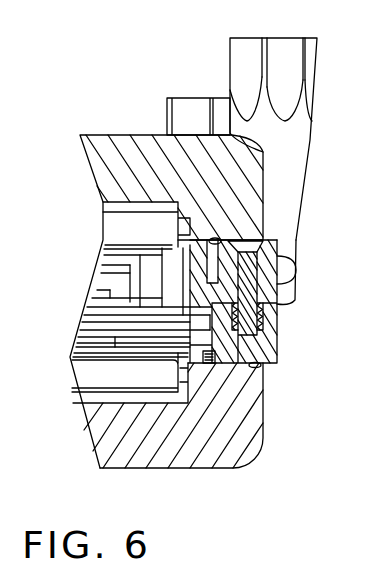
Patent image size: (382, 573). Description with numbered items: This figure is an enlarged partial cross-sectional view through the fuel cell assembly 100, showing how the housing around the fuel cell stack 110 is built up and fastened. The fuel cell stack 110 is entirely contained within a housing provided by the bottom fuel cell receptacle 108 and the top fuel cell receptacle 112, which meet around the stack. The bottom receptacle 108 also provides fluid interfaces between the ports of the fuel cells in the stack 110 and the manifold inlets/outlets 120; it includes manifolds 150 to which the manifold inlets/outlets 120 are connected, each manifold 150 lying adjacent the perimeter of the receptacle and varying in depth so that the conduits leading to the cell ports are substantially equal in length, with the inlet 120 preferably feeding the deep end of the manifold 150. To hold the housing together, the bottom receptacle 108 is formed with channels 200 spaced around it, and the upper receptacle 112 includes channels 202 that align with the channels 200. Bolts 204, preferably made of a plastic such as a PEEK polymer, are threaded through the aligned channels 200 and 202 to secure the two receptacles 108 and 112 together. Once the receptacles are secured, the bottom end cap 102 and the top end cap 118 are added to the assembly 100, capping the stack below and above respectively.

The fuel cell assembly 100 is at (138, 90).
The bottom end cap 102 is at (253, 428).
The bottom fuel cell receptacle 108 is at (277, 348).
The fuel cell stack 110 is at (88, 290).
The top fuel cell receptacle 112 is at (252, 237).
The top end cap 118 is at (242, 165).
The manifold inlets/outlets 120 is at (248, 38).
The manifolds 150 is at (215, 237).
The channels 200 is at (216, 369).
The channels 202 is at (257, 293).
The bolts 204 is at (264, 320).